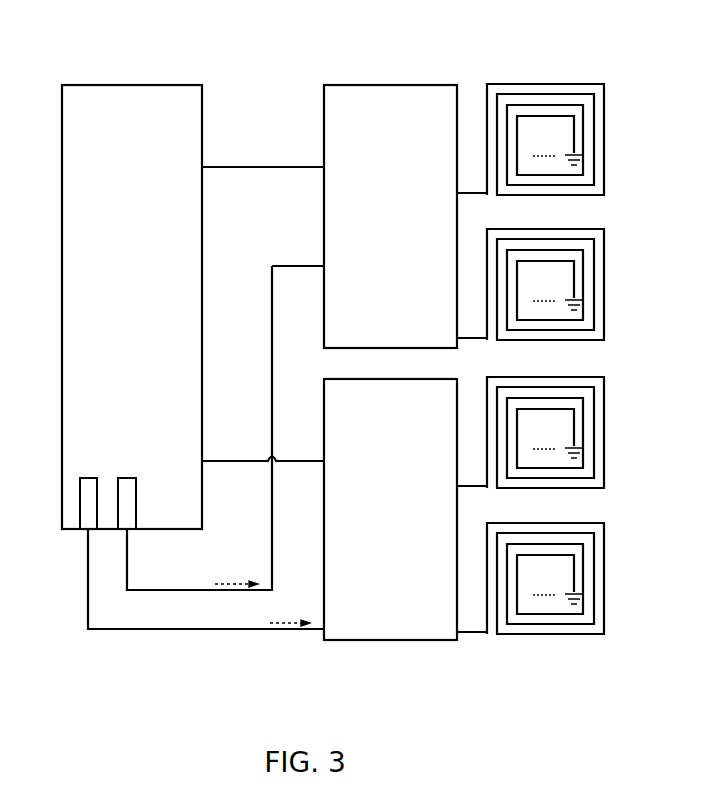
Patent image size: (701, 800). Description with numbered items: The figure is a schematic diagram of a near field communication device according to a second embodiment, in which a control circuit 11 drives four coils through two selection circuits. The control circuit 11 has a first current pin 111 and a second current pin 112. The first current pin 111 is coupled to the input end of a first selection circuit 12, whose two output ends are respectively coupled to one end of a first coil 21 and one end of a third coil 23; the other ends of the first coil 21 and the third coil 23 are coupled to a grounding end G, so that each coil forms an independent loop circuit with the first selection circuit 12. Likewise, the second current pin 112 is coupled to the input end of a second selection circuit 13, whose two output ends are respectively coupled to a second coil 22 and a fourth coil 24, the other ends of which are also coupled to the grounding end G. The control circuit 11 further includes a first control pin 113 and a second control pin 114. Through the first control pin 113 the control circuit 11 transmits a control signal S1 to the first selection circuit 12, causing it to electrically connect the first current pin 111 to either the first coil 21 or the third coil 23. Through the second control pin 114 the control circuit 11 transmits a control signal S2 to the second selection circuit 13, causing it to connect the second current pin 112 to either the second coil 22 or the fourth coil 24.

The control circuit 11 is at (135, 84).
The first selection circuit 12 is at (392, 84).
The second selection circuit 13 is at (388, 641).
The first current pin 111 is at (227, 166).
The second current pin 112 is at (223, 463).
The first control pin 113 is at (128, 498).
The second control pin 114 is at (88, 498).
The first coil 21 is at (530, 139).
The second coil 22 is at (530, 432).
The third coil 23 is at (530, 284).
The fourth coil 24 is at (530, 578).
The control signal S1 is at (236, 574).
The control signal S2 is at (290, 612).
The grounding end G is at (584, 144).